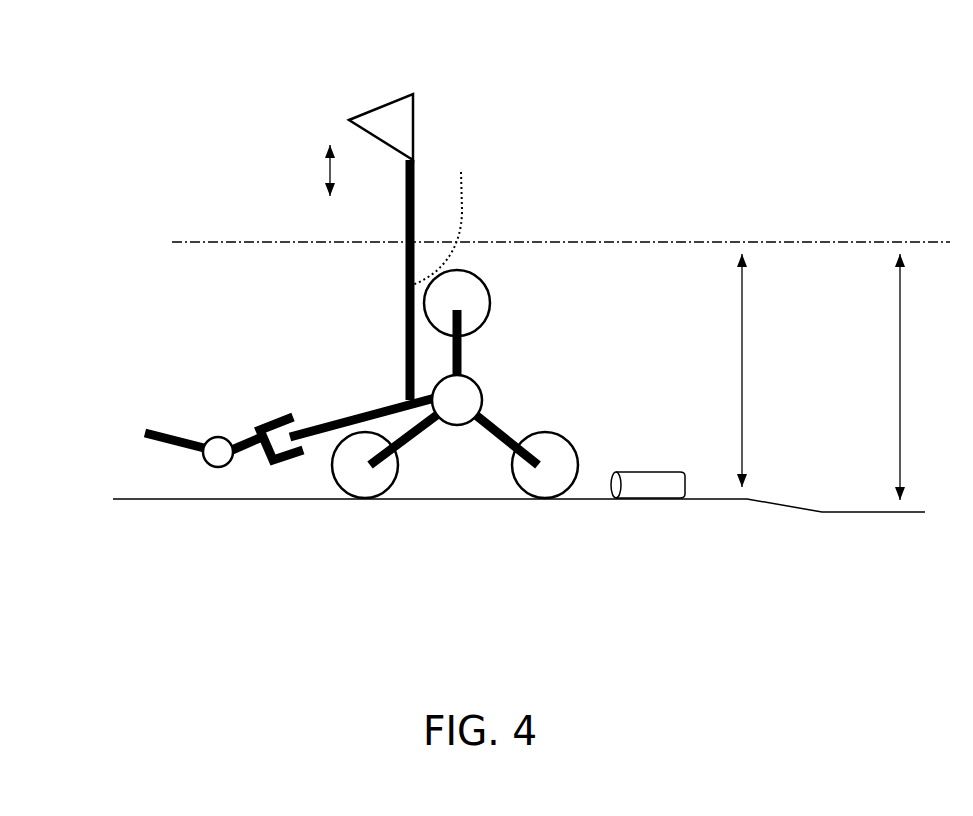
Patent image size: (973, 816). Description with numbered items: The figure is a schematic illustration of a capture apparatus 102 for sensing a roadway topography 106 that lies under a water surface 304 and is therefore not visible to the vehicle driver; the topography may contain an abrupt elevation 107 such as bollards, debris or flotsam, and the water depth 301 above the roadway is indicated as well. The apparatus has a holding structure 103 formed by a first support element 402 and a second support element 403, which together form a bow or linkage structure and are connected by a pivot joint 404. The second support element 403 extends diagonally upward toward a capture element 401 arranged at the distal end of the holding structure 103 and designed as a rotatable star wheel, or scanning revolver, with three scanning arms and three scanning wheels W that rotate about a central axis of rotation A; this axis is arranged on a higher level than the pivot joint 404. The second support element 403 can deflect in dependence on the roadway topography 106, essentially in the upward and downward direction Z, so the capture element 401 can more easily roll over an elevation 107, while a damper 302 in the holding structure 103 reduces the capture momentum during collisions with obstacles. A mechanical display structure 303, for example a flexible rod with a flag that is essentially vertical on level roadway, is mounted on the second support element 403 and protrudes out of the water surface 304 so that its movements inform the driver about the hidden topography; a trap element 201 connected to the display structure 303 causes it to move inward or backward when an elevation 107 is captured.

The capture apparatus 102 is at (217, 202).
The holding structure 103 is at (228, 357).
The roadway topography 106 is at (158, 500).
The abrupt elevation 107 is at (653, 472).
The trap element 201 is at (462, 220).
The water depth 301 is at (851, 377).
The damper 302 is at (287, 455).
The display structure 303 is at (395, 100).
The water surface 304 is at (843, 242).
The capture element 401 is at (525, 315).
The first support element 402 is at (165, 445).
The second support element 403 is at (342, 420).
The pivot joint 404 is at (218, 452).
The central axis of rotation A is at (458, 403).
The scanning wheel W is at (475, 322).
The upward and downward direction Z is at (316, 170).